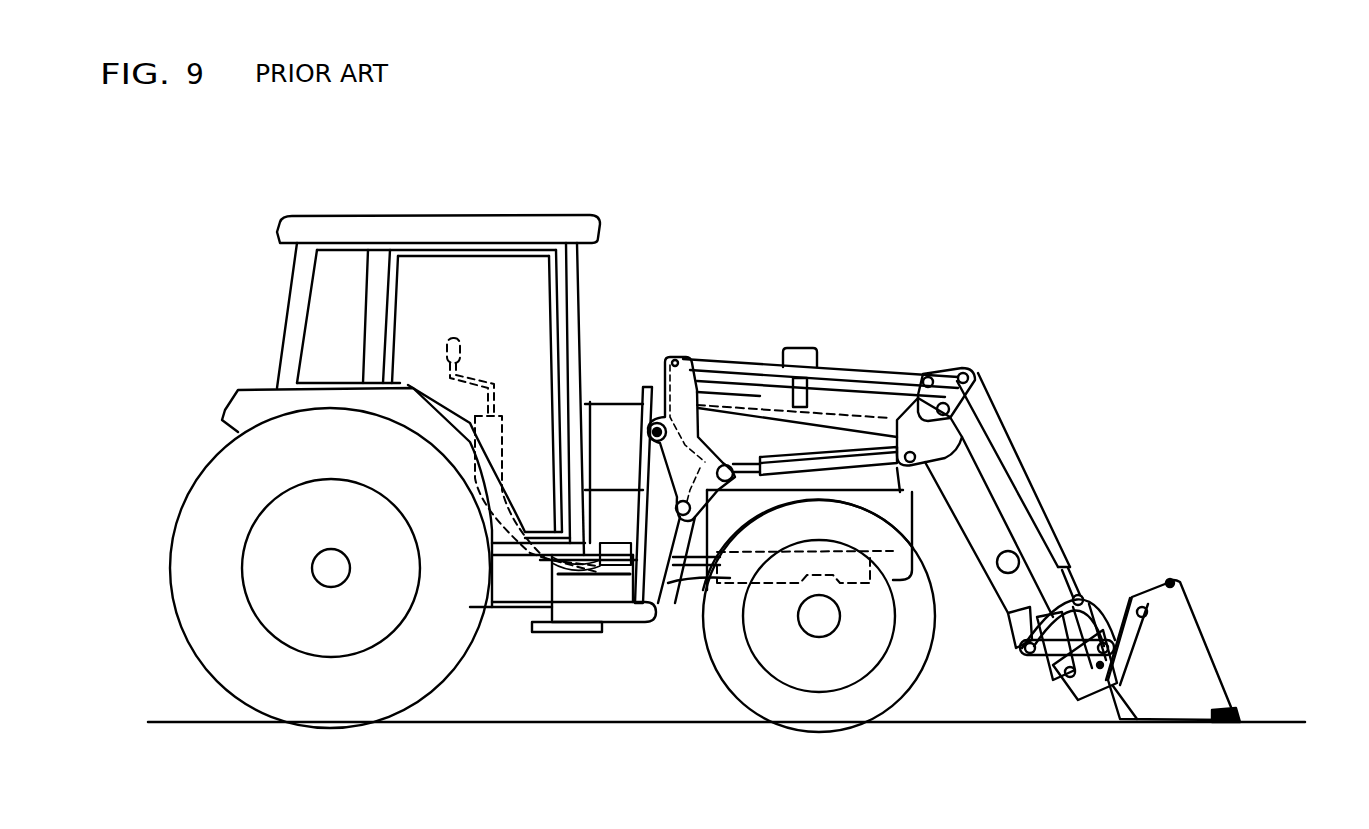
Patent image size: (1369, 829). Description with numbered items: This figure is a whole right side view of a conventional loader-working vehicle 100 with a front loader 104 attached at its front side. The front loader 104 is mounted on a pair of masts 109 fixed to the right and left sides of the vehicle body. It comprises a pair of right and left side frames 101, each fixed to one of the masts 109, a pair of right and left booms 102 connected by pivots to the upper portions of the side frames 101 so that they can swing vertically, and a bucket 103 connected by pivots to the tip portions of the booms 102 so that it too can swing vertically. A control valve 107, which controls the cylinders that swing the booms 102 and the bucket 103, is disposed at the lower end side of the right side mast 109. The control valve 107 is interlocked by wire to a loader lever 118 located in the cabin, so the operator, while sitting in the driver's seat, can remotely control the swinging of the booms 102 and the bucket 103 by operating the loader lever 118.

The loader-working vehicle 100 is at (241, 164).
The side frame 101 is at (662, 367).
The boom 102 is at (873, 403).
The bucket 103 is at (1200, 650).
The front loader 104 is at (1020, 392).
The control valve 107 is at (620, 560).
The mast 109 is at (667, 568).
The loader lever 118 is at (467, 377).